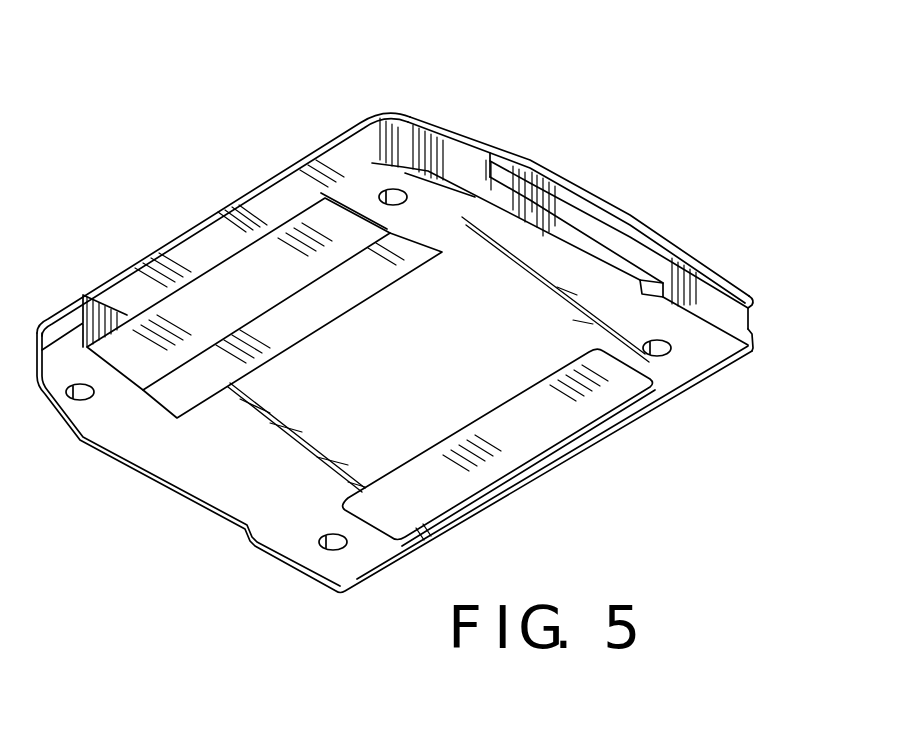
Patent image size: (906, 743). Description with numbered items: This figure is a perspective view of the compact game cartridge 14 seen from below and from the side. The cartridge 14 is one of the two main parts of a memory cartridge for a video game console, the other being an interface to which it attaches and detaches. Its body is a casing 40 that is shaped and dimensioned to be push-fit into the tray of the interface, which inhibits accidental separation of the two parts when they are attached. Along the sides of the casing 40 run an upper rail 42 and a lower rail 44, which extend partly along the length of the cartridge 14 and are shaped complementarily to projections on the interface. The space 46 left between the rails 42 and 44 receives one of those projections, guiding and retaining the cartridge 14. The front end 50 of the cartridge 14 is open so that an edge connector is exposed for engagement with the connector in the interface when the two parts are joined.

The compact game cartridge 14 is at (641, 120).
The casing 40 is at (235, 468).
The upper rail 42 is at (563, 181).
The lower rail 44 is at (757, 343).
The space 46 is at (762, 316).
The front end 50 is at (263, 203).